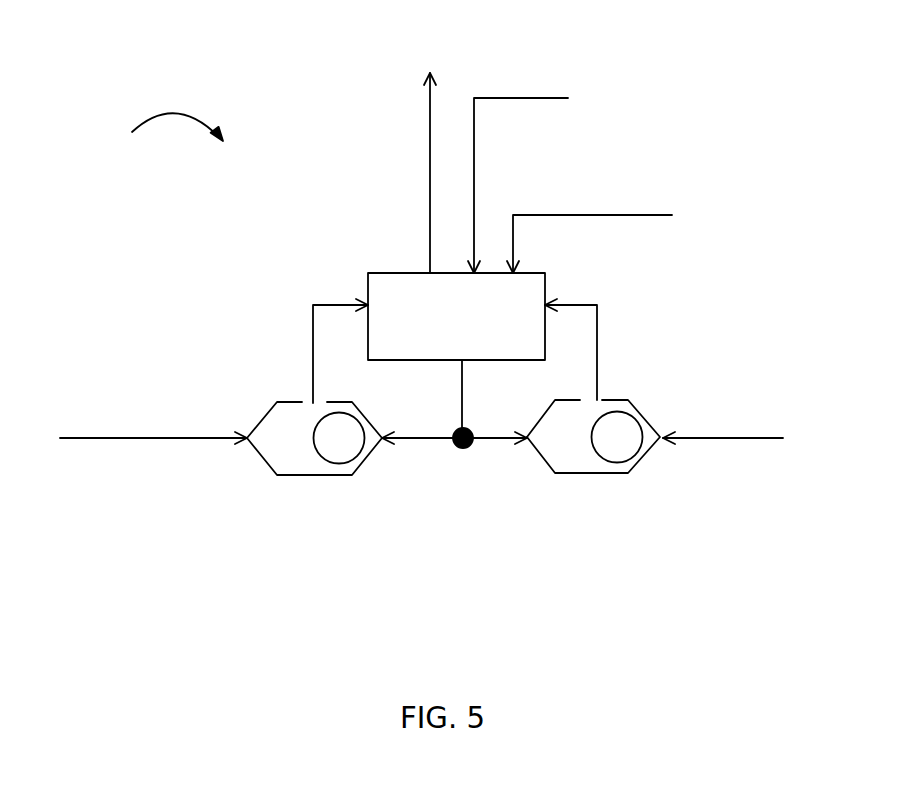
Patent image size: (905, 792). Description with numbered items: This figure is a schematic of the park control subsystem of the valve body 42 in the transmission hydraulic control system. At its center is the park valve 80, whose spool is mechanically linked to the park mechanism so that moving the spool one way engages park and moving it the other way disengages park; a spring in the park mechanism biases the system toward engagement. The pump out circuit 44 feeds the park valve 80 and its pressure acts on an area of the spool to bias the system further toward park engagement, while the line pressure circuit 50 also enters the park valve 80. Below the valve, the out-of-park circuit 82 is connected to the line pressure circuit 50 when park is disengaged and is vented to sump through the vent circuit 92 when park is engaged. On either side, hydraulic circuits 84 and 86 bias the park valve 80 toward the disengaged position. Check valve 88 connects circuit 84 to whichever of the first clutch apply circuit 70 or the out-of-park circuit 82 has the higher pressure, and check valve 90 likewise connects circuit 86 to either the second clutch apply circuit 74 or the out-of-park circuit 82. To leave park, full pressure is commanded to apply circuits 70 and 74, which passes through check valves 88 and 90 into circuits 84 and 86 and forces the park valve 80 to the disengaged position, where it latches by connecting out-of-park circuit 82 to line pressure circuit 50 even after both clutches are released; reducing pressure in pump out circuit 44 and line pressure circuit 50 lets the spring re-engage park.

The valve body 42 is at (164, 145).
The pump out circuit 44 is at (617, 213).
The line pressure circuit 50 is at (517, 98).
The clutch 1 apply circuit 70 is at (123, 442).
The clutch 2 apply circuit 74 is at (712, 442).
The park valve 80 is at (388, 273).
The out-of-park circuit 82 is at (435, 440).
The hydraulic circuit 84 is at (312, 329).
The hydraulic circuit 86 is at (598, 333).
The check valve 88 is at (265, 413).
The check valve 90 is at (640, 408).
The vent circuit 92 is at (428, 116).